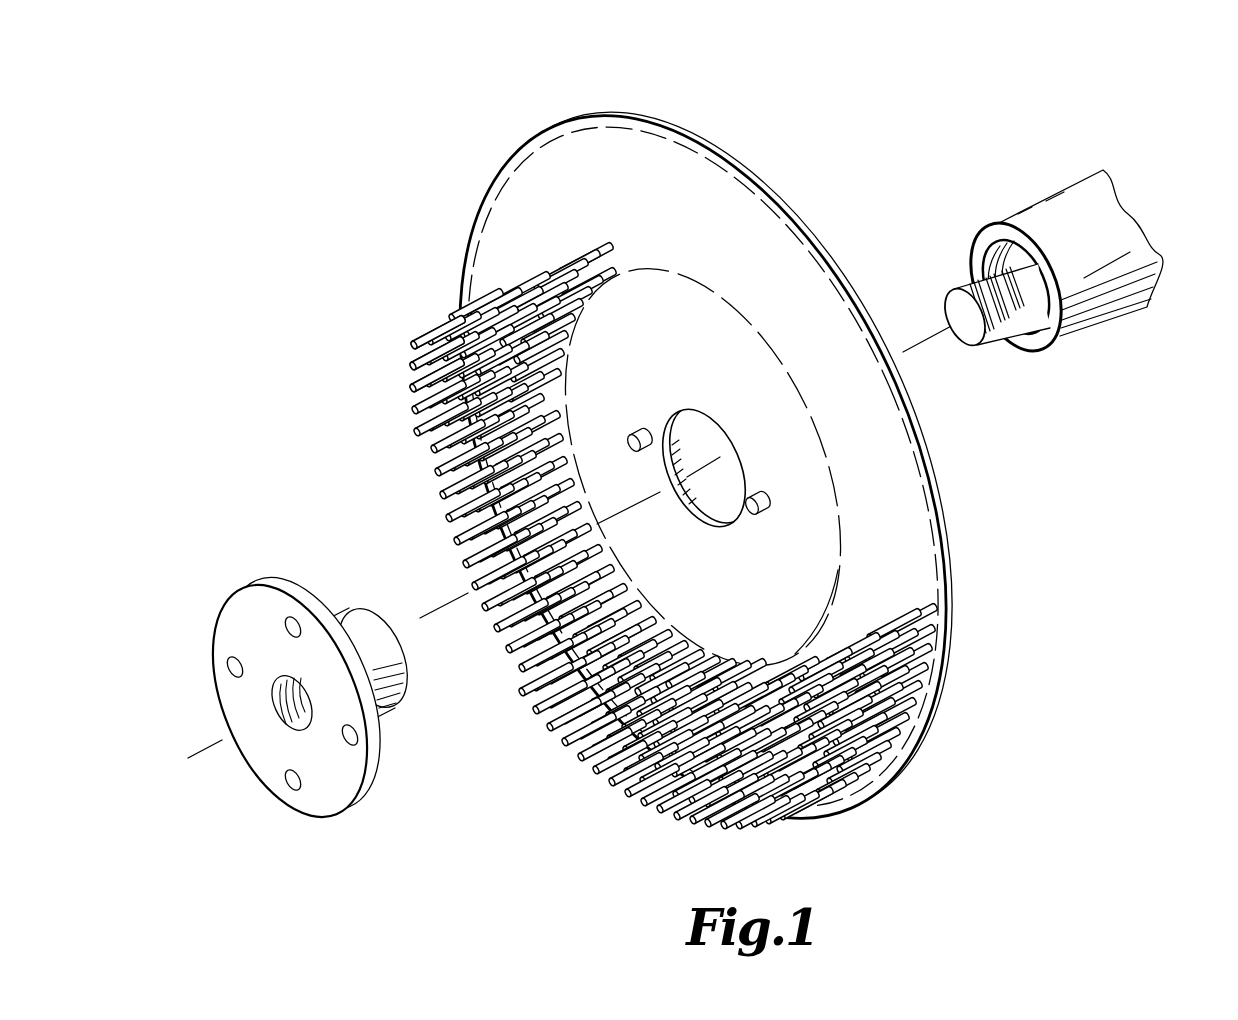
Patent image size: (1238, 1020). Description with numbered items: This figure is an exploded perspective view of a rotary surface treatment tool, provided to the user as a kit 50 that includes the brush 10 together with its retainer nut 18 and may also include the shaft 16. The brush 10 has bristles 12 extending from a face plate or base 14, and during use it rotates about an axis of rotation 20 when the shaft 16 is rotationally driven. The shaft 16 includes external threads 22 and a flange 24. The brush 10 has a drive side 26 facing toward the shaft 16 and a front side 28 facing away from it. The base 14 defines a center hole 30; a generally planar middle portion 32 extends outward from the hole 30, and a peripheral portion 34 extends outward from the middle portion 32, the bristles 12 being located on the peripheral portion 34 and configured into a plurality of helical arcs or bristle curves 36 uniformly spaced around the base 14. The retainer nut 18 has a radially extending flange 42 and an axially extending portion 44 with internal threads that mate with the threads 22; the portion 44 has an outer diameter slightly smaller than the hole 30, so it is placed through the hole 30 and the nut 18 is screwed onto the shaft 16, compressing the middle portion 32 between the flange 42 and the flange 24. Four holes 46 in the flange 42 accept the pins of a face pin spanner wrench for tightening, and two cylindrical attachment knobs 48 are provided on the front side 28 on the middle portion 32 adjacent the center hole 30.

The kit 50 is at (316, 104).
The brush 10 is at (514, 144).
The bristles 12 is at (931, 615).
The base 14 is at (893, 469).
The shaft 16 is at (1105, 163).
The retainer nut 18 is at (254, 580).
The axis of rotation 20 is at (208, 760).
The external threads 22 is at (997, 334).
The flange 24 is at (1131, 215).
The drive side 26 is at (786, 205).
The front side 28 is at (700, 182).
The center hole 30 is at (709, 425).
The middle portion 32 is at (641, 326).
The peripheral portion 34 is at (806, 300).
The bristle curves 36 is at (428, 386).
The radially extending flange 42 is at (331, 795).
The axially extending portion 44 is at (357, 612).
The holes 46 is at (234, 658).
The attachment knobs 48 is at (630, 428).